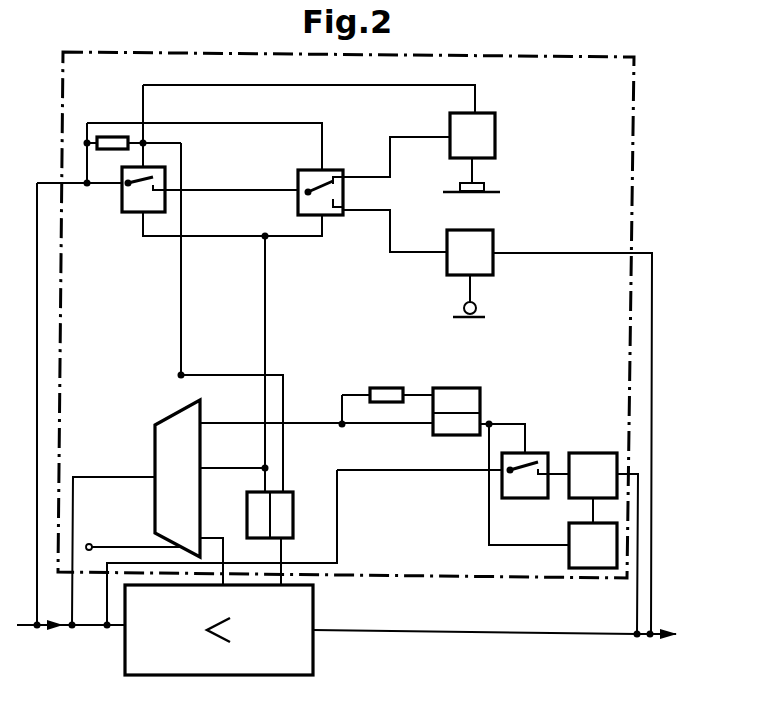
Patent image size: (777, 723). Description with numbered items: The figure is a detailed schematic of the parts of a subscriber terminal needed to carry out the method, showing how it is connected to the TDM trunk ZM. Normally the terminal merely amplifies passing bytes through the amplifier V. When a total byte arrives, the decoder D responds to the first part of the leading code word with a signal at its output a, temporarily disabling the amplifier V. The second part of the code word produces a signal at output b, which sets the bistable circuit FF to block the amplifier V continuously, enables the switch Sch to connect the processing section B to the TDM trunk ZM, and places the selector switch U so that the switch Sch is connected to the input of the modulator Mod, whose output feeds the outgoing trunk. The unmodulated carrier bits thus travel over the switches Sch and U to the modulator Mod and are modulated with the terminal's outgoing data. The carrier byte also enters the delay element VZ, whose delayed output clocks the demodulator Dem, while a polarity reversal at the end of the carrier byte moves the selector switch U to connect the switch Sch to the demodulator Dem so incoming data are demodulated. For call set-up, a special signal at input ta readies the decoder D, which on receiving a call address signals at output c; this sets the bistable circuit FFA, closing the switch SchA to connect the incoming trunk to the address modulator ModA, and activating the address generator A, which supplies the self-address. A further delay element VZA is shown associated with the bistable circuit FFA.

The processing section B is at (632, 88).
The delay element VZ is at (130, 87).
The switch Sch is at (125, 191).
The selector switch U is at (330, 203).
The demodulator Dem is at (484, 158).
The modulator Mod is at (486, 273).
The delay element VZA is at (430, 356).
The bistable circuit FFA is at (456, 399).
The switch SchA is at (537, 463).
The address modulator ModA is at (597, 463).
The address generator A is at (579, 554).
The decoder D is at (161, 455).
The decoder output a is at (211, 526).
The decoder output b is at (232, 456).
The decoder output c is at (271, 411).
The decoder input ta is at (130, 534).
The bistable circuit FF is at (286, 512).
The amplifier V is at (300, 655).
The TDM trunk ZM is at (27, 627).